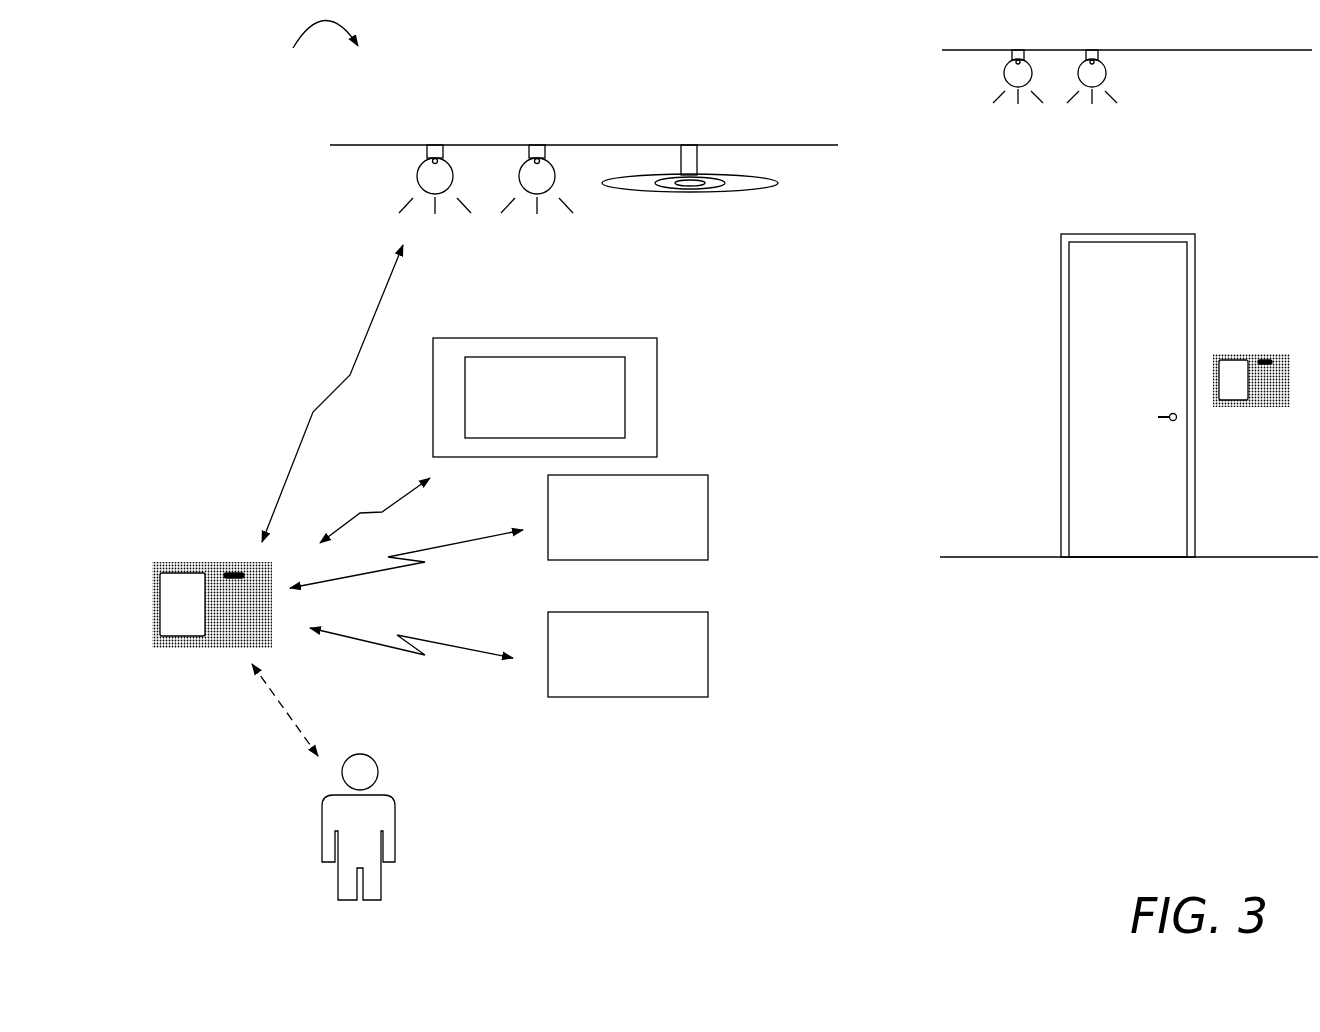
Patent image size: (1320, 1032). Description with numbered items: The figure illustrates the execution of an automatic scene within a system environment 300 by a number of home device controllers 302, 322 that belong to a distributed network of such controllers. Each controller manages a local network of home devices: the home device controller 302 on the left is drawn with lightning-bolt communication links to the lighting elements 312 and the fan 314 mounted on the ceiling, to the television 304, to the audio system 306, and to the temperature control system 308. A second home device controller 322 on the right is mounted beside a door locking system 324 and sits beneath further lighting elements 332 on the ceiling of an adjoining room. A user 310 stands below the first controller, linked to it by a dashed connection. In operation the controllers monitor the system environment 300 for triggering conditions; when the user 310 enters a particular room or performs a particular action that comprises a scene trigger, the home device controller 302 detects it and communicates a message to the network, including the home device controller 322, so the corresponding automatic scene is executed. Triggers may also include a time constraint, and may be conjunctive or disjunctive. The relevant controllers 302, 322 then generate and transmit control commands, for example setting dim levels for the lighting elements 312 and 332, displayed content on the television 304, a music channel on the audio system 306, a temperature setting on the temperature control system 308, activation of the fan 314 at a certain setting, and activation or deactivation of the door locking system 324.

The system environment 300 is at (304, 47).
The home device controller 302 is at (337, 500).
The television 304 is at (545, 397).
The audio system 306 is at (628, 517).
The temperature control system 308 is at (628, 654).
The user 310 is at (358, 841).
The lighting elements 312 is at (486, 179).
The fan 314 is at (690, 182).
The home device controller 322 is at (1264, 368).
The door locking system 324 is at (1128, 395).
The lighting elements 332 is at (1055, 96).